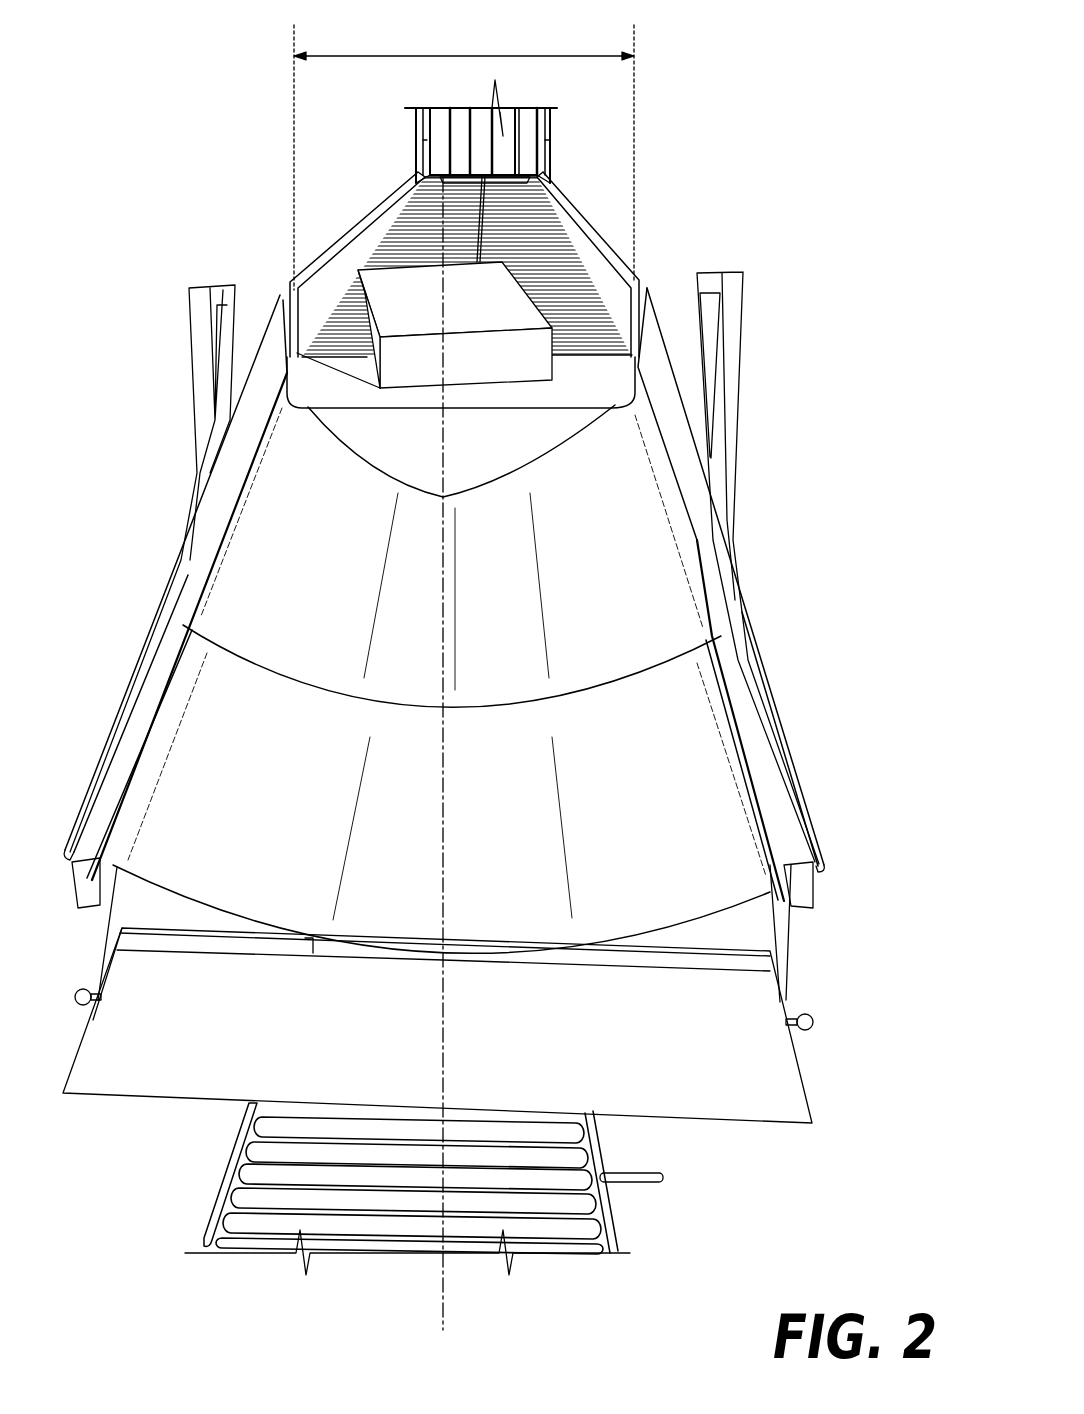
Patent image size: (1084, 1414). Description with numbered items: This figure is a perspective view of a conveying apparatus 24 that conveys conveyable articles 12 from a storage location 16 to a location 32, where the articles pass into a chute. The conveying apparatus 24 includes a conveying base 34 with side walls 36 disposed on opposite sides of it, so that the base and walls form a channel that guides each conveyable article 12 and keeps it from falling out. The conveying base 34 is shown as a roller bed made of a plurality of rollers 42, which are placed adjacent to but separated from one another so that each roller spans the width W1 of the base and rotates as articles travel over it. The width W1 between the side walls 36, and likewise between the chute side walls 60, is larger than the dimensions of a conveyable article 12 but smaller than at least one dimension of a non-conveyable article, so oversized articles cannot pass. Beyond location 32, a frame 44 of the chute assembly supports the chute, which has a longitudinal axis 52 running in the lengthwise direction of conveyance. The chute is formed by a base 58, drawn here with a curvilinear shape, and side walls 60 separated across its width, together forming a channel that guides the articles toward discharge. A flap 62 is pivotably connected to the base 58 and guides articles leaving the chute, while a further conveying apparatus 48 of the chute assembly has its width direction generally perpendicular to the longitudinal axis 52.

The conveyable article 12 is at (506, 309).
The storage location 16 is at (552, 100).
The conveying apparatus 24 is at (467, 224).
The location 32 is at (647, 271).
The conveying base 34 is at (413, 235).
The side walls 36 is at (370, 222).
The rollers 42 is at (518, 220).
The frame 44 is at (737, 338).
The conveying apparatus 48 is at (618, 1228).
The longitudinal axis 52 is at (448, 1330).
The base 58 is at (690, 706).
The side walls 60 is at (207, 508).
The flap 62 is at (793, 1088).
The width W1 is at (474, 55).